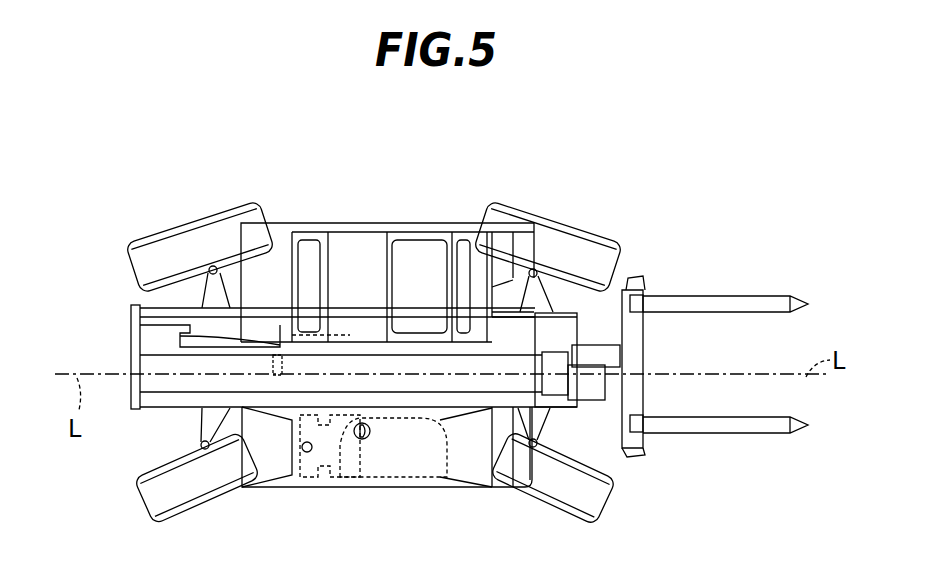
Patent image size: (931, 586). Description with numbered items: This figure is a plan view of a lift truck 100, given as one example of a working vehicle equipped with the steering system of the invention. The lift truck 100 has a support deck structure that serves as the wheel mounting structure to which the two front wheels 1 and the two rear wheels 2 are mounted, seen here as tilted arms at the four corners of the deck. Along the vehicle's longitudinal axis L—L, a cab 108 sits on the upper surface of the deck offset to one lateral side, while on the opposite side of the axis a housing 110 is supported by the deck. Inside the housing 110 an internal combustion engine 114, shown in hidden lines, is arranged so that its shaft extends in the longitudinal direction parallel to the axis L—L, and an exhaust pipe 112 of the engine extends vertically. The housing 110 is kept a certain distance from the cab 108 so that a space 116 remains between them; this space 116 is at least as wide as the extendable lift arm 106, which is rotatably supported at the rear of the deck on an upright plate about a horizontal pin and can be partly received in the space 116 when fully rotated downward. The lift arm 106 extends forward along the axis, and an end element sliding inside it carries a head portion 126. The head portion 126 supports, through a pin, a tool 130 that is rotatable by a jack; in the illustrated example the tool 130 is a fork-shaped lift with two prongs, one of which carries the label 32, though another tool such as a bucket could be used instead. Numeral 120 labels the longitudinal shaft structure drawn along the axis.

The lift truck 100 is at (430, 188).
The cab 108 is at (356, 255).
The space 116 is at (365, 342).
The shaft housing 120 is at (190, 334).
The extendable lift arm 106 is at (529, 363).
The head portion 126 is at (625, 356).
The tool 130 is at (735, 302).
The lower fork prong 32 is at (737, 432).
The housing 110 is at (446, 480).
The internal combustion engine 114 is at (386, 471).
The exhaust pipe 112 is at (348, 447).
The rear wheels 2 is at (213, 234).
The front wheels 1 is at (562, 234).